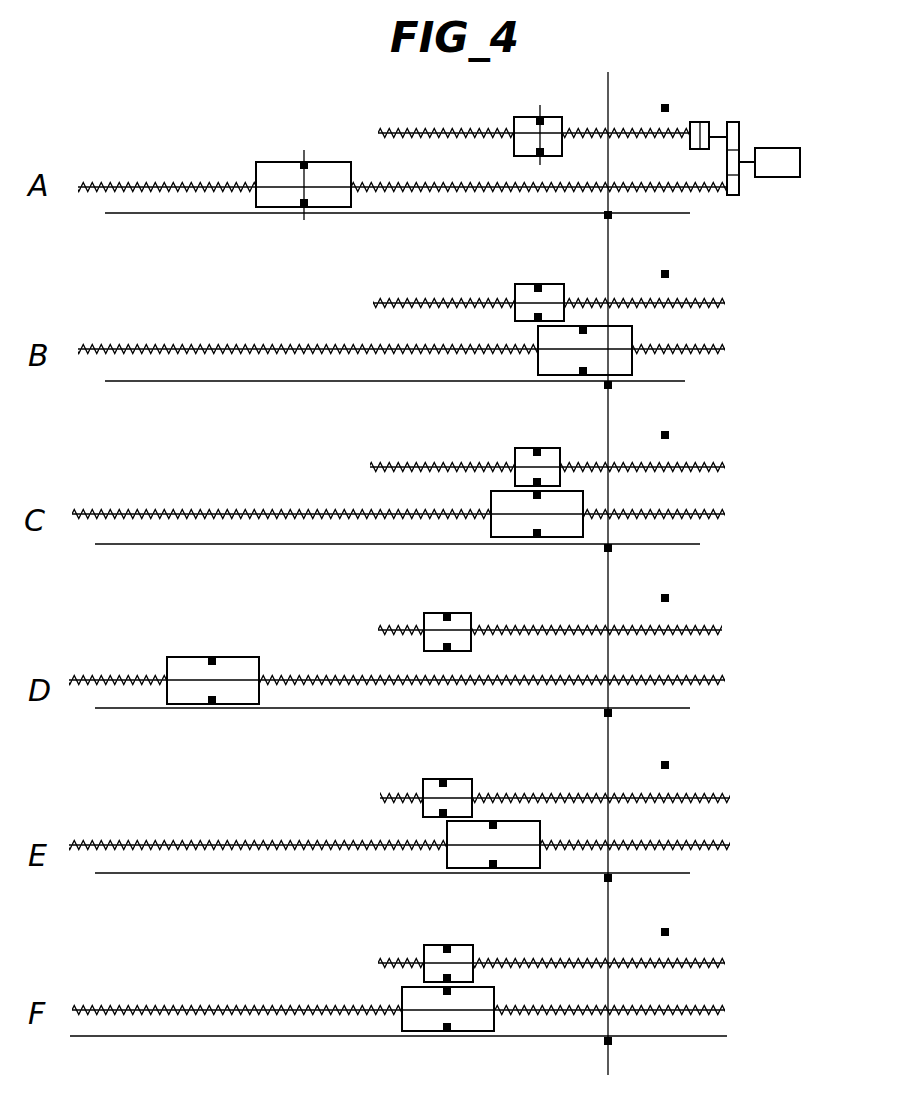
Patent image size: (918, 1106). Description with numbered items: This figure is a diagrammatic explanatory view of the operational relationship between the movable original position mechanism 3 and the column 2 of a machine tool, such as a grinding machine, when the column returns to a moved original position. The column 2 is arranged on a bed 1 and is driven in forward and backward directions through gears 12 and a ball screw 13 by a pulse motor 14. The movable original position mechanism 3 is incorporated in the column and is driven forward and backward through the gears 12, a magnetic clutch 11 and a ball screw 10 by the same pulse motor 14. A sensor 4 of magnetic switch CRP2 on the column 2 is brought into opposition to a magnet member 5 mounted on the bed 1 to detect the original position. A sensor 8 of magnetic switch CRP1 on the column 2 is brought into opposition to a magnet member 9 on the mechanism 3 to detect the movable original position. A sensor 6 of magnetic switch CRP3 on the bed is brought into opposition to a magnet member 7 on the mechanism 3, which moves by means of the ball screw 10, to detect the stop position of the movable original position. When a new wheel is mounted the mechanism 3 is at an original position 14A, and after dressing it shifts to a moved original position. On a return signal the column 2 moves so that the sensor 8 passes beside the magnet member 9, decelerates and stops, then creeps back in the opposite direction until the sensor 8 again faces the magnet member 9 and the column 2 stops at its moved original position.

The bed 1 is at (383, 213).
The column 2 is at (340, 162).
The movable original position mechanism 3 is at (554, 130).
The sensor 4 is at (302, 206).
The magnet member 5 is at (612, 216).
The sensor 6 is at (669, 108).
The magnet member 7 is at (537, 121).
The sensor 8 is at (302, 163).
The magnet member 9 is at (514, 152).
The ball screw 10 is at (598, 134).
The magnetic clutch 11 is at (702, 122).
The gears 12 is at (740, 139).
The ball screw 13 is at (470, 195).
The pulse motor 14 is at (772, 177).
The original position 14A is at (608, 88).